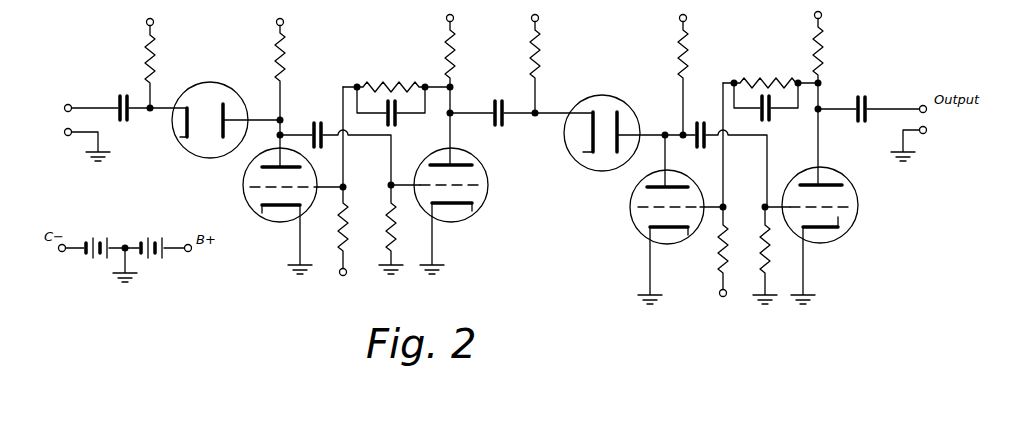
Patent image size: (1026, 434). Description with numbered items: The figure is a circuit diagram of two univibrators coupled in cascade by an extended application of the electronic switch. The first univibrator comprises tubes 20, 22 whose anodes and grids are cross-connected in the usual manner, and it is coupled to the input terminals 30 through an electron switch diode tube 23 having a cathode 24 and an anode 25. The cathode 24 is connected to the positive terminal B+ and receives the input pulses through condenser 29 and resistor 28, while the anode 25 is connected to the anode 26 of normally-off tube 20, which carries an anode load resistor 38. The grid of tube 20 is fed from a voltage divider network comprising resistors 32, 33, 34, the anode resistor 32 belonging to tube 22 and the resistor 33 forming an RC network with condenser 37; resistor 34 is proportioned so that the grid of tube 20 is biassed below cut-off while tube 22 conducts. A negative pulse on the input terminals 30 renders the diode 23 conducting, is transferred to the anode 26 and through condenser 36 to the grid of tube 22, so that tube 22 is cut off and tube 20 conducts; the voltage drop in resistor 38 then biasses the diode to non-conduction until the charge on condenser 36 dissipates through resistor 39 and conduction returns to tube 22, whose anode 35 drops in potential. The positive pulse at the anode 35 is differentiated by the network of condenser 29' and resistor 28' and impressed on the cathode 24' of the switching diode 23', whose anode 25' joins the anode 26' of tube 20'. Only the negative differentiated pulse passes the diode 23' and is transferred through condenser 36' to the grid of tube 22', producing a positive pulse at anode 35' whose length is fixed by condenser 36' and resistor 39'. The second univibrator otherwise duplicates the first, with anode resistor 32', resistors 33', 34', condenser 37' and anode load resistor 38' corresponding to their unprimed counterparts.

The normally-off univibrator tube 20 is at (271, 211).
The initially conducting univibrator tube 22 is at (457, 211).
The electron switch diode tube 23 is at (211, 111).
The cathode 24 is at (177, 104).
The anode 25 is at (244, 112).
The anode 26 is at (277, 147).
The resistor 28 is at (165, 62).
The condenser 29 is at (124, 121).
The input terminals 30 is at (64, 133).
The anode resistor 32 is at (467, 88).
The resistor 33 is at (396, 74).
The resistor 34 is at (335, 191).
The anode 35 is at (470, 160).
The condenser 36 is at (335, 145).
The condenser 37 is at (394, 113).
The anode load resistor 38 is at (297, 75).
The resistor 39 is at (404, 230).
The normally-off tube of second univibrator 20' is at (660, 237).
The initially conducting tube of second univibrator 22' is at (834, 235).
The switching diode 23' is at (618, 123).
The cathode 24' is at (572, 147).
The anode 25' is at (606, 157).
The anode 26' is at (680, 161).
The resistor 28' is at (554, 62).
The condenser 29' is at (521, 102).
The anode resistor 32' is at (836, 97).
The resistor 33' is at (772, 71).
The resistor 34' is at (706, 199).
The anode 35' is at (835, 167).
The condenser 36' is at (725, 150).
The condenser 37' is at (771, 110).
The anode load resistor 38' is at (702, 73).
The resistor 39' is at (792, 255).